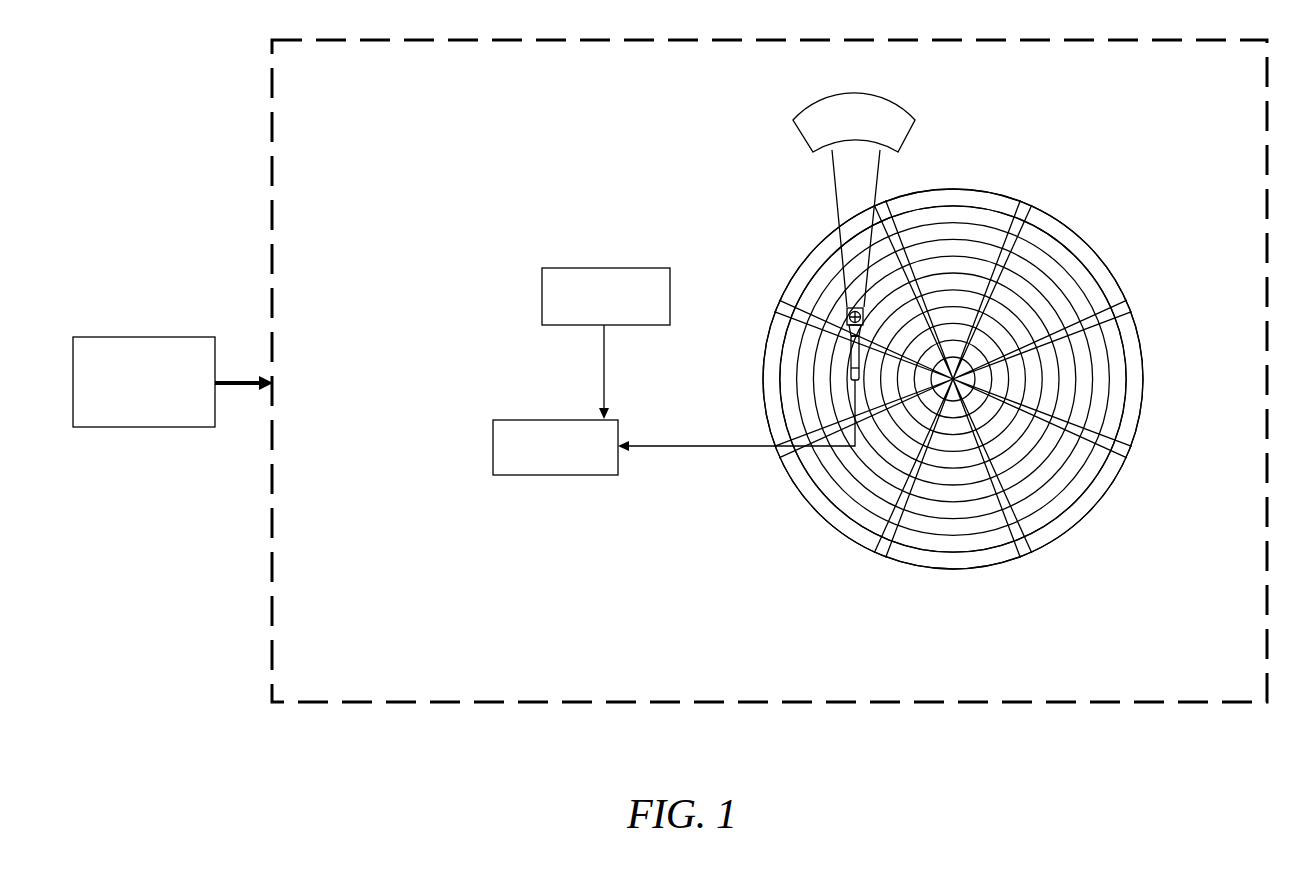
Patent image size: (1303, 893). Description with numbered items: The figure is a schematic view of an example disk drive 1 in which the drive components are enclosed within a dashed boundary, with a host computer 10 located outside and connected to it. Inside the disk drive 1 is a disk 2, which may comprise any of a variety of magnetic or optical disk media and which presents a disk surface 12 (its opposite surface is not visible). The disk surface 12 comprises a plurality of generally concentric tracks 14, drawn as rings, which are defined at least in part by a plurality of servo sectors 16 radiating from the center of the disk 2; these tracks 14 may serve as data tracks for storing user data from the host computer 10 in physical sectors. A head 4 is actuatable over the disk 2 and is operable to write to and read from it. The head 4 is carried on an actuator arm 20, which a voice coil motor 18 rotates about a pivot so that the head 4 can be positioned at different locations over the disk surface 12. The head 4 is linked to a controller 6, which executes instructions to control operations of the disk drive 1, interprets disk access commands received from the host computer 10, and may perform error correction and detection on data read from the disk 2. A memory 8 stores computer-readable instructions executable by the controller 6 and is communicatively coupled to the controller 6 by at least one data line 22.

The disk drive 1 is at (473, 702).
The disk 2 is at (1089, 228).
The head 4 is at (844, 385).
The controller 6 is at (553, 475).
The memory 8 is at (572, 325).
The host computer 10 is at (150, 316).
The disk surface 12 is at (973, 196).
The tracks 14 is at (1119, 400).
The servo sectors 16 is at (1027, 206).
The voice coil motor 18 is at (813, 152).
The actuator arm 20 is at (834, 170).
The data line 22 is at (607, 388).